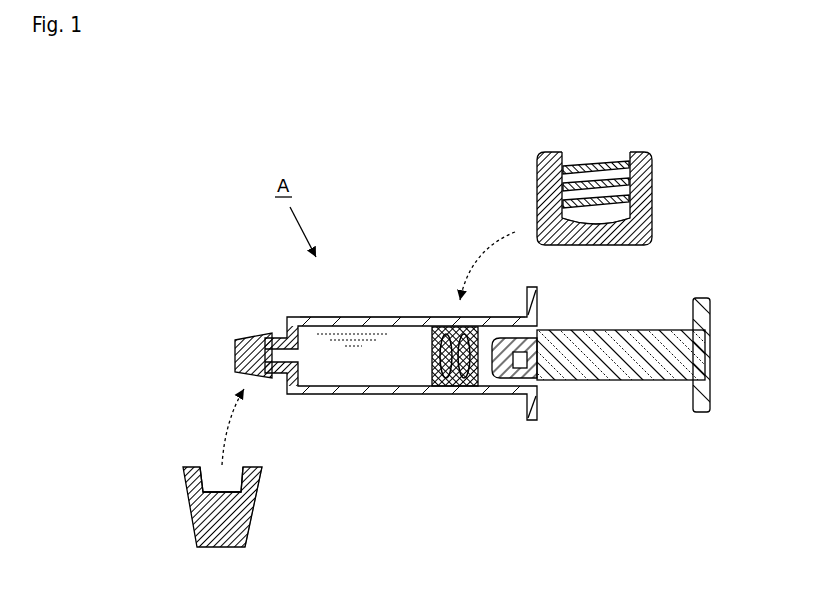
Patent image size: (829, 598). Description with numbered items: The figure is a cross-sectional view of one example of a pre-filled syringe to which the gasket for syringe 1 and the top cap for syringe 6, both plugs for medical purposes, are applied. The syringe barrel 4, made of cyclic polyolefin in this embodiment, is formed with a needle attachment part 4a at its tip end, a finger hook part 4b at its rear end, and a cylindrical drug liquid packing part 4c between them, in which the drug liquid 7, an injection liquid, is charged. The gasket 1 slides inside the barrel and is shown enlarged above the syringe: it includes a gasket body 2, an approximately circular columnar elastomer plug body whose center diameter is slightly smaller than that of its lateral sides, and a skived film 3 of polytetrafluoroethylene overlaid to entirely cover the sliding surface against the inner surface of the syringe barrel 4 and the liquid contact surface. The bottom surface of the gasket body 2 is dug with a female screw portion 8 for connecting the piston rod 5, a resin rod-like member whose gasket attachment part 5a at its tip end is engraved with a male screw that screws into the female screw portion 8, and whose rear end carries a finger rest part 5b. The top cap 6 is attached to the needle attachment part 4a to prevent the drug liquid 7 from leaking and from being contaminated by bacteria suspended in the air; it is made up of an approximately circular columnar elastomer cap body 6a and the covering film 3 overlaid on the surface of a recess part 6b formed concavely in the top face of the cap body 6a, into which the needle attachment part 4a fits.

The gasket for syringe 1 is at (447, 376).
The gasket body 2 is at (538, 180).
The skived film for covering 3 is at (540, 222).
The syringe barrel 4 is at (362, 396).
The needle attachment part 4a is at (283, 338).
The finger hook part 4b is at (539, 300).
The drug liquid packing part 4c is at (378, 324).
The piston rod 5 is at (646, 346).
The gasket attachment part 5a is at (520, 380).
The finger rest part 5b is at (708, 318).
The top cap for syringe 6 is at (240, 340).
The cap body 6a is at (250, 528).
The recess part 6b is at (252, 488).
The drug liquid 7 is at (333, 363).
The female screw portion 8 is at (603, 153).